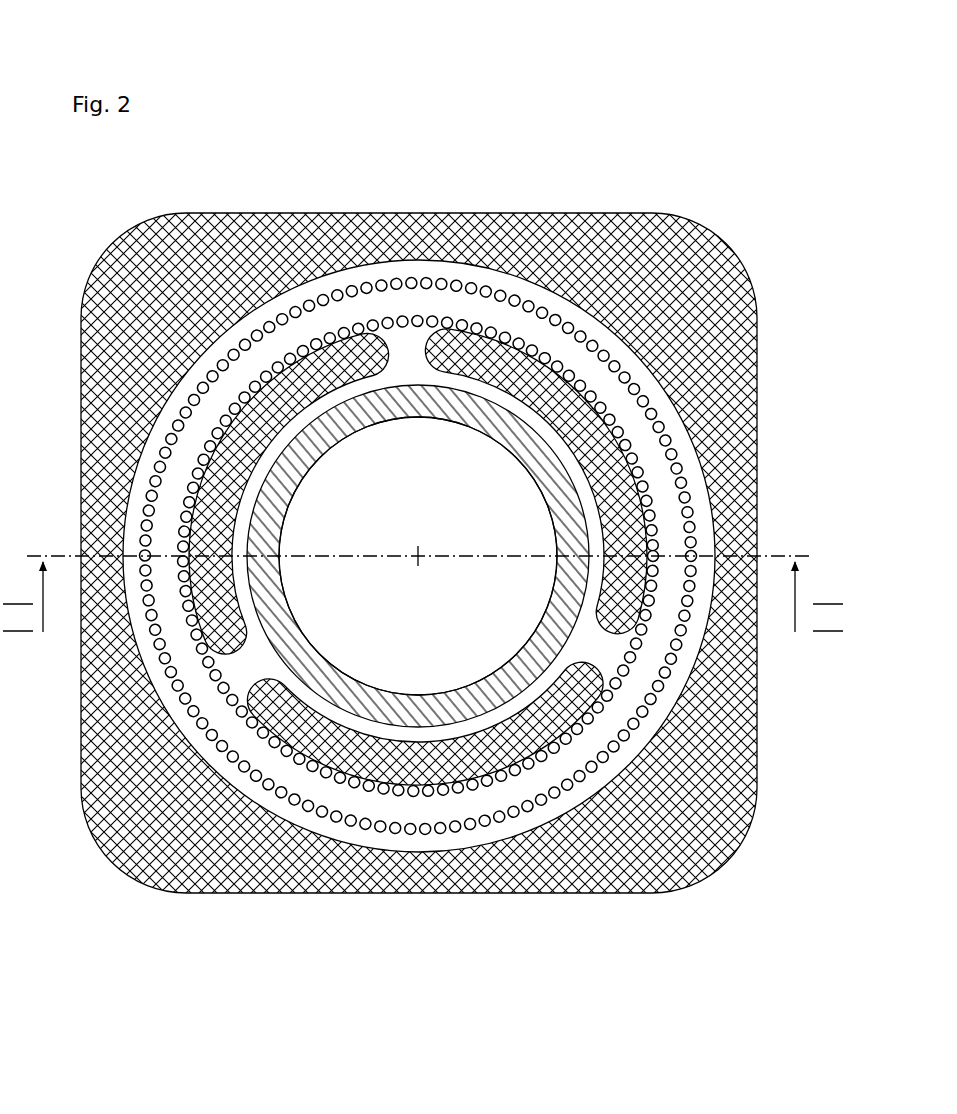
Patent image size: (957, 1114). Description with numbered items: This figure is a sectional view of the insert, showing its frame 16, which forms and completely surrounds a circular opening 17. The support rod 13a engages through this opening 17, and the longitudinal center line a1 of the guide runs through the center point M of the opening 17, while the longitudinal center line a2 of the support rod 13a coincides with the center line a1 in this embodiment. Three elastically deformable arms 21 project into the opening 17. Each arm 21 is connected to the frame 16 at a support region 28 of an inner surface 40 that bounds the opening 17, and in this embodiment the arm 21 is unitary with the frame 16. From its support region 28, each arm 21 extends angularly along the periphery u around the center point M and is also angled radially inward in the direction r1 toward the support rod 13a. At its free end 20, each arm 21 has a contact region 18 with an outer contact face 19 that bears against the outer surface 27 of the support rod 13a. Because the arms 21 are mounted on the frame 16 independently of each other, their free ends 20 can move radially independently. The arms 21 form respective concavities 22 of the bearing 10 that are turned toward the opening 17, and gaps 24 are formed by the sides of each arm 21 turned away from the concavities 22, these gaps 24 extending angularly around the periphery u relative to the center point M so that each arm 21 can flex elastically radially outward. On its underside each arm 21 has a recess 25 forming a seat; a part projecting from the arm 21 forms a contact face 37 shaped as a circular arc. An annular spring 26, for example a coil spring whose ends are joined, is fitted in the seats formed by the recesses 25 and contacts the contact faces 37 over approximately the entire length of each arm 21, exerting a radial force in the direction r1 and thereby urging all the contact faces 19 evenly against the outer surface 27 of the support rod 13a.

The bearing 10 is at (423, 497).
The gaps 24 is at (160, 232).
The recess 25 is at (135, 356).
The elastically deformable arms 21 is at (170, 420).
The annular spring 26 is at (700, 470).
The inner surface 40 is at (748, 810).
The concavities 22 is at (698, 242).
The outer contact face 19 is at (482, 328).
The contact region 18 is at (588, 298).
The free end 20 is at (440, 322).
The frame 16 is at (522, 348).
The support region 28 is at (345, 330).
The contact face 37 is at (215, 325).
The support rod 13a is at (415, 700).
The opening 17 is at (415, 440).
The outer surface 27 is at (268, 672).
The center point M is at (420, 553).
The longitudinal center line of the guide a1 is at (415, 553).
The longitudinal center line of the support rod a2 is at (416, 553).
The radially inward direction r1 is at (548, 633).
The periphery u is at (657, 475).